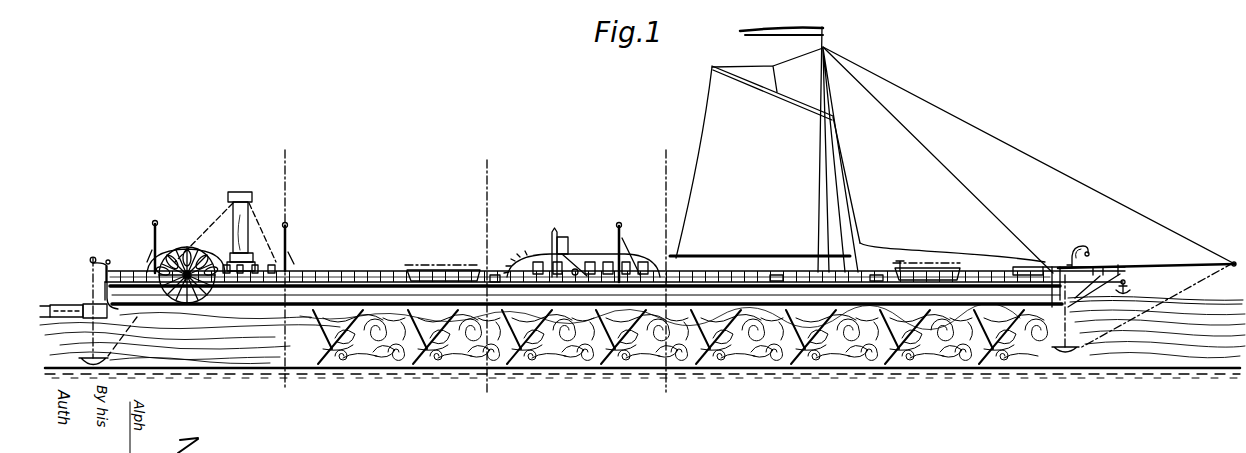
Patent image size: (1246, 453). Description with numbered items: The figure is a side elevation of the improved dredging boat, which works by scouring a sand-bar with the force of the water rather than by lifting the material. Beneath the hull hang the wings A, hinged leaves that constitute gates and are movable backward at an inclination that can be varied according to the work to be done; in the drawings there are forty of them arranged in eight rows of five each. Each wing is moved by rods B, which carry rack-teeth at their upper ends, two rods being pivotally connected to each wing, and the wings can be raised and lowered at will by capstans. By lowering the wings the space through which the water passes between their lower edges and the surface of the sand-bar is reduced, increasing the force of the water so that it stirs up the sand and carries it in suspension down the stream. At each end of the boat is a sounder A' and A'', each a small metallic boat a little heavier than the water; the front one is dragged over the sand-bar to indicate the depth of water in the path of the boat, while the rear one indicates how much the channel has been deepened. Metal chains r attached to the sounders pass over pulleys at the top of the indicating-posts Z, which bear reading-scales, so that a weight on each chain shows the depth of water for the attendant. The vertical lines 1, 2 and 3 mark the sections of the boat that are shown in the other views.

The indicating-posts Z is at (387, 251).
The metal chains r is at (391, 253).
The wings A is at (671, 337).
The rods B is at (653, 329).
The sounder A' is at (1142, 307).
The sounder A'' is at (86, 311).
The line 1 1 is at (292, 289).
The line 2 2 is at (494, 295).
The line 3 3 is at (673, 291).